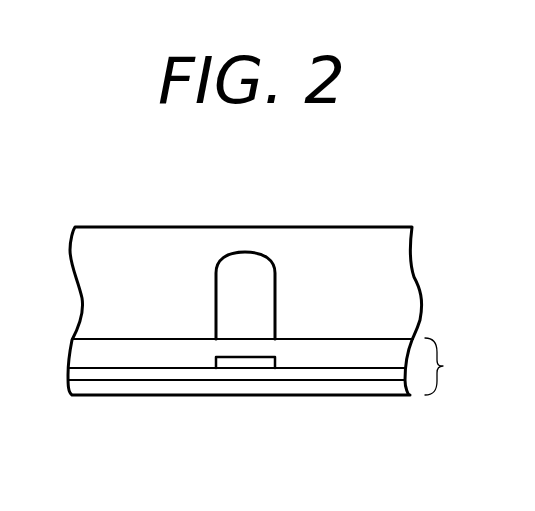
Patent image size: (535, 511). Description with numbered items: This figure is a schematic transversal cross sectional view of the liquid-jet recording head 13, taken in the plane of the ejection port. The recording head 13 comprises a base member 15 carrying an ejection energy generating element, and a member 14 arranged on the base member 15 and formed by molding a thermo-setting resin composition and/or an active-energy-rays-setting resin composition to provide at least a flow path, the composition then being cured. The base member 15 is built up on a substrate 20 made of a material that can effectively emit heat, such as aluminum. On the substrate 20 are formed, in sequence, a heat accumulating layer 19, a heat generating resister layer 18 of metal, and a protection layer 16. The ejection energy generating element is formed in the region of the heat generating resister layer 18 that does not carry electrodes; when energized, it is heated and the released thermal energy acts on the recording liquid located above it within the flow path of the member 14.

The recording head 13 is at (131, 227).
The member 14 is at (244, 253).
The base member 15 is at (447, 366).
The protection layer 16 is at (162, 348).
The heat generating resister layer 18 is at (250, 363).
The heat accumulating layer 19 is at (298, 378).
The substrate 20 is at (360, 384).